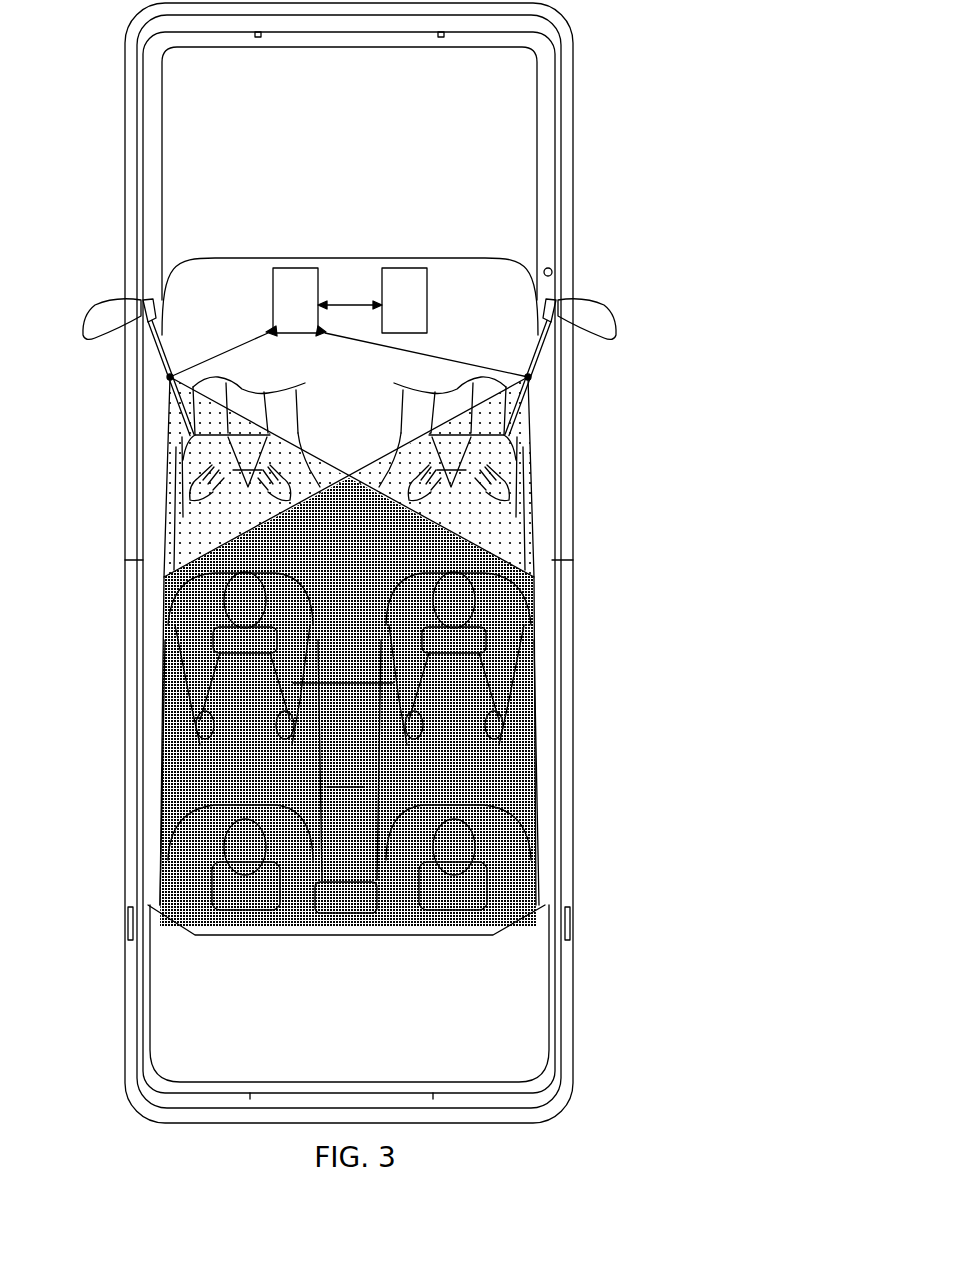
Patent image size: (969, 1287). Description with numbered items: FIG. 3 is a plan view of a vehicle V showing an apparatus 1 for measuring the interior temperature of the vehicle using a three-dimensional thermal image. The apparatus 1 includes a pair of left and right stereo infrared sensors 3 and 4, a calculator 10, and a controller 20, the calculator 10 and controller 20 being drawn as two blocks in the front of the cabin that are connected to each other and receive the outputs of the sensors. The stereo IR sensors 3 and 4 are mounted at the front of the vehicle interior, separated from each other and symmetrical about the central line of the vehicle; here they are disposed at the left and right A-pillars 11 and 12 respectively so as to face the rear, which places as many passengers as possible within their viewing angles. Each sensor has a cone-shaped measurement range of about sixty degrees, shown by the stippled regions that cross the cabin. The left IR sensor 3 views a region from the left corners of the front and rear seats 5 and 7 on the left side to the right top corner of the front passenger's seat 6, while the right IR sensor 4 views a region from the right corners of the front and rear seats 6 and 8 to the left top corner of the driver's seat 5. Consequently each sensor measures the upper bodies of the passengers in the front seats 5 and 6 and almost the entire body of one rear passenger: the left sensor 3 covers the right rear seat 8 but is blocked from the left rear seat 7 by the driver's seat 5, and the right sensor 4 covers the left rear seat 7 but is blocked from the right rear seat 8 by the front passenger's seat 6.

The vehicle V is at (572, 148).
The apparatus for measuring interior temperature of a vehicle 1 is at (470, 307).
The controller 20 is at (296, 268).
The calculator 10 is at (402, 268).
The left A-pillar 11 is at (155, 345).
The right A-pillar 12 is at (542, 352).
The left stereo infrared sensor 3 is at (168, 381).
The right stereo infrared sensor 4 is at (531, 382).
The driver's seat 5 is at (178, 487).
The front passenger's seat 6 is at (522, 486).
The left rear seat 7 is at (160, 722).
The right rear seat 8 is at (540, 683).